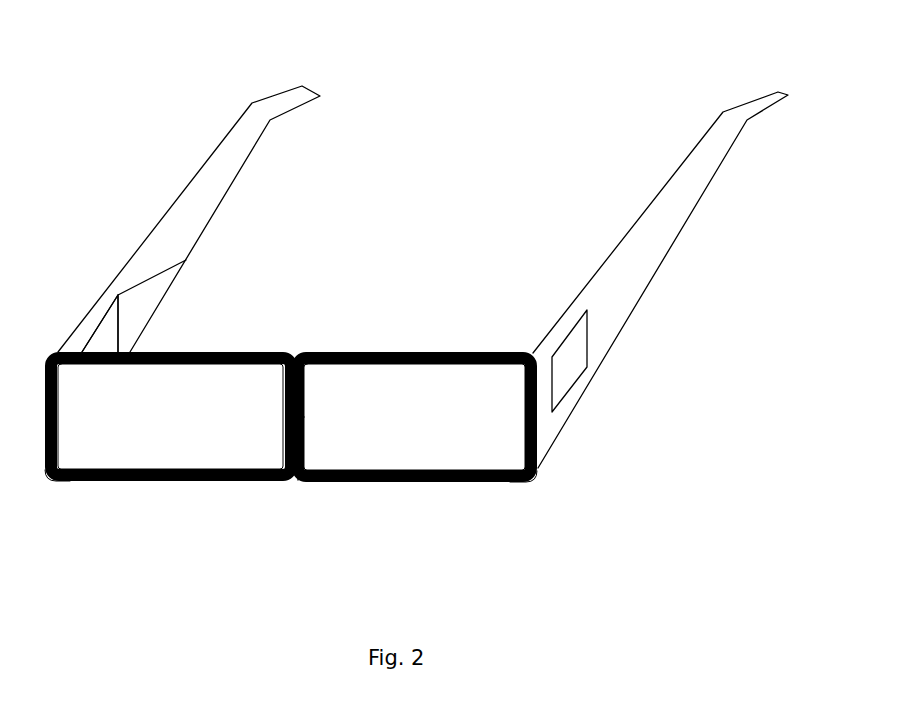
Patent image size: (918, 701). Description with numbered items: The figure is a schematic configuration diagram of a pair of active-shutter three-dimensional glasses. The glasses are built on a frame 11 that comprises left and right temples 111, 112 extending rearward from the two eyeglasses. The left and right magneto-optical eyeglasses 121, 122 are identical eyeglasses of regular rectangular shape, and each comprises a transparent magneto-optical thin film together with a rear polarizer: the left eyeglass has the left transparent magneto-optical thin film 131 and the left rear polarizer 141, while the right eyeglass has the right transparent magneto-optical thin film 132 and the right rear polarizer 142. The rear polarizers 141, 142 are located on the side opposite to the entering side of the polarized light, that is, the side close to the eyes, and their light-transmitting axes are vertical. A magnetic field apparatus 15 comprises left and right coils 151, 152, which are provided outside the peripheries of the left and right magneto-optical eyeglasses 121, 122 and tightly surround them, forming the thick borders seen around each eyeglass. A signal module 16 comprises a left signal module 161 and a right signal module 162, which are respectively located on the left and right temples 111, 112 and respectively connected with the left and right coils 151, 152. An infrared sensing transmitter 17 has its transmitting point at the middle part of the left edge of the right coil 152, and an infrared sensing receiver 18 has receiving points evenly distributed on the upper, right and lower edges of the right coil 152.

The frame 11 is at (423, 269).
The left temple 111 is at (183, 215).
The right temple 112 is at (648, 245).
The left magneto-optical eyeglass 121 is at (188, 482).
The right magneto-optical eyeglass 122 is at (445, 488).
The left transparent magneto-optical thin film 131 is at (98, 482).
The right transparent magneto-optical thin film 132 is at (483, 482).
The left rear polarizer 141 is at (70, 482).
The right rear polarizer 142 is at (518, 483).
The magnetic field apparatus 15 is at (447, 352).
The left coil 151 is at (128, 482).
The right coil 152 is at (377, 482).
The signal module 16 is at (356, 305).
The left signal module 161 is at (105, 343).
The right signal module 162 is at (568, 362).
The infrared sensing transmitter 17 is at (300, 482).
The infrared sensing receiver 18 is at (513, 418).